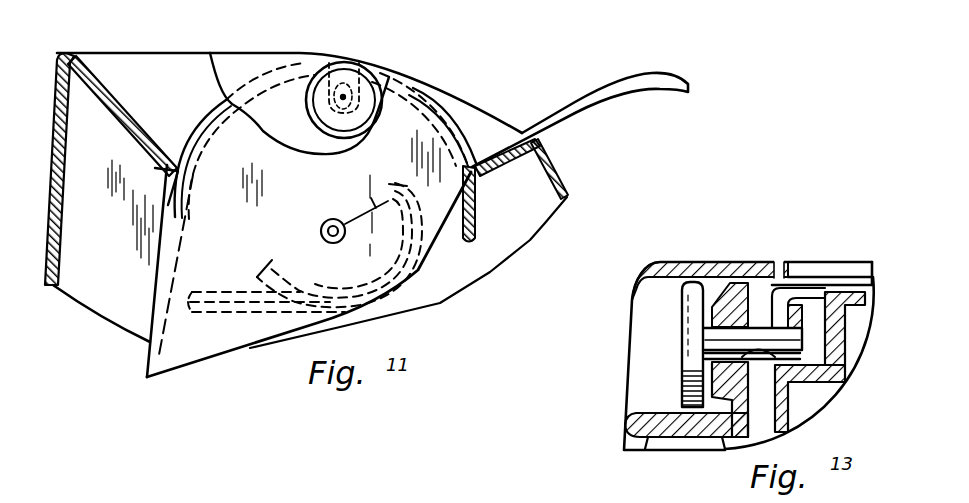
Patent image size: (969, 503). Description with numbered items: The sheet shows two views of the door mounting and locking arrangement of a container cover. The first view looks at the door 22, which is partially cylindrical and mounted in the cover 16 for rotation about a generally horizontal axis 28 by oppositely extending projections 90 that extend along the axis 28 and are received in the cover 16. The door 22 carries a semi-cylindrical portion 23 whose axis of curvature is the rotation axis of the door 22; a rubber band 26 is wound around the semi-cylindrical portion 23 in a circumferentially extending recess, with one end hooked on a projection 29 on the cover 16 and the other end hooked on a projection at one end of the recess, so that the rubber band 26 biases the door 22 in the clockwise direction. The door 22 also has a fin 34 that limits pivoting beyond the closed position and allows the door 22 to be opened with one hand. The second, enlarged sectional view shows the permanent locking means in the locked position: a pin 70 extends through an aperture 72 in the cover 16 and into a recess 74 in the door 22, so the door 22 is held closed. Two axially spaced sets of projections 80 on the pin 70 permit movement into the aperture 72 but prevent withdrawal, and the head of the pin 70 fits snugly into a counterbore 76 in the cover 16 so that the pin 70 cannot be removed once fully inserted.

In FIG. 13, the cover 16 is at (616, 436).
In FIG. 13, the door 22 is at (833, 343).
In FIG. 11, the semi-cylindrical portion 23 is at (272, 260).
In FIG. 11, the rubber band 26 is at (240, 312).
In FIG. 11, the axis 28 is at (333, 219).
In FIG. 11, the projection 29 is at (194, 295).
In FIG. 11, the fin 34 is at (681, 81).
In FIG. 11, the pin 70 is at (372, 73).
In FIG. 13, the pin 70 is at (686, 309).
In FIG. 13, the aperture 72 is at (788, 389).
In FIG. 13, the recess 74 is at (810, 362).
In FIG. 11, the counterbore 76 is at (307, 113).
In FIG. 13, the counterbore 76 is at (649, 410).
In FIG. 13, the projections 80 is at (800, 312).
In FIG. 11, the projections 90 is at (321, 232).